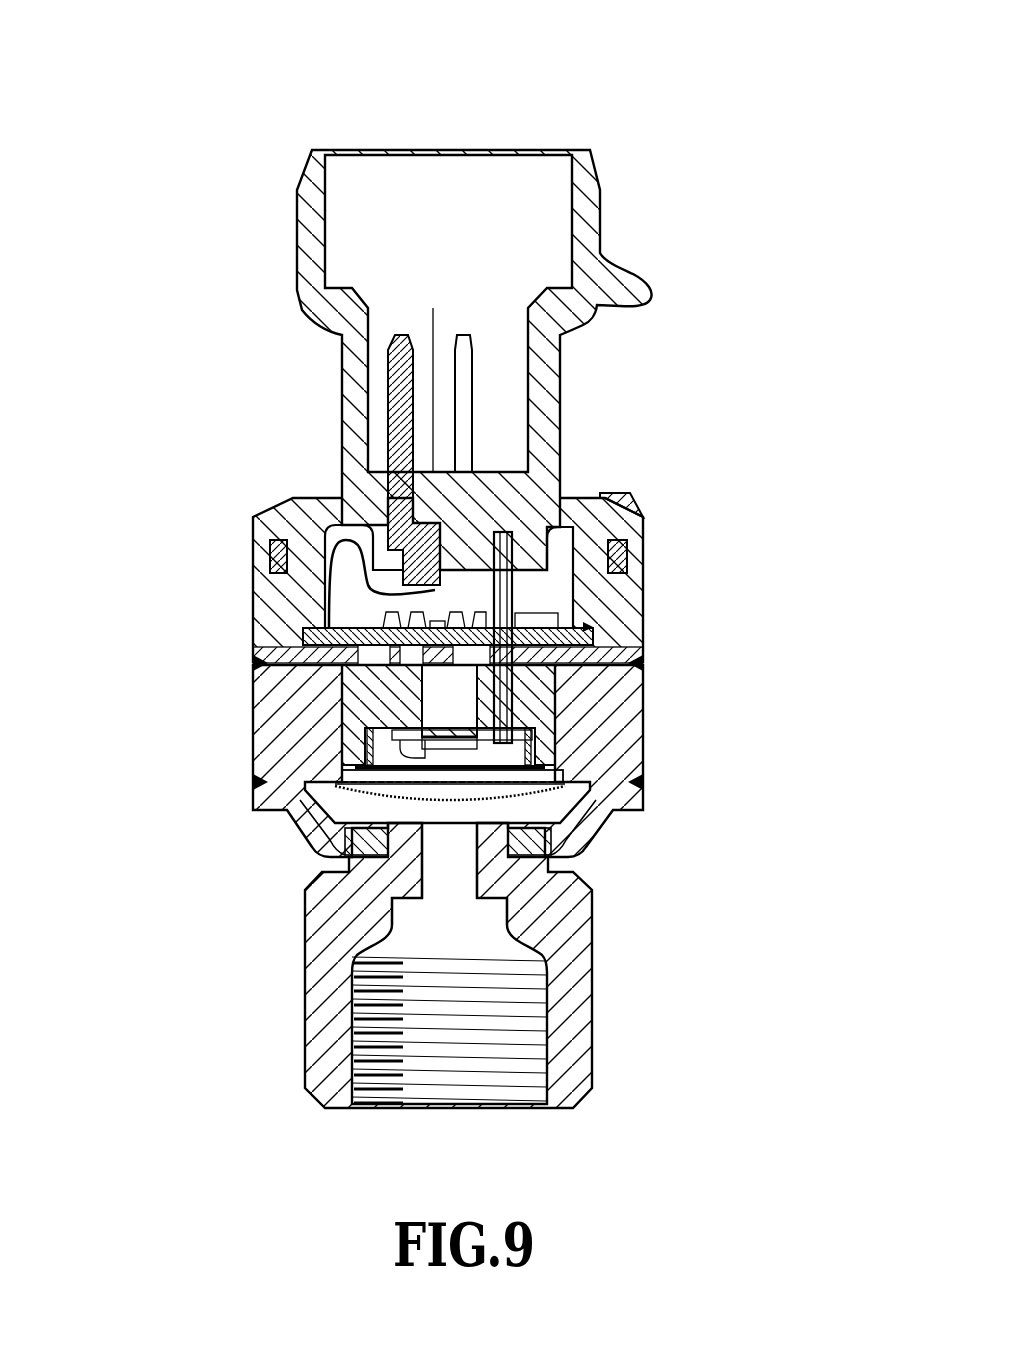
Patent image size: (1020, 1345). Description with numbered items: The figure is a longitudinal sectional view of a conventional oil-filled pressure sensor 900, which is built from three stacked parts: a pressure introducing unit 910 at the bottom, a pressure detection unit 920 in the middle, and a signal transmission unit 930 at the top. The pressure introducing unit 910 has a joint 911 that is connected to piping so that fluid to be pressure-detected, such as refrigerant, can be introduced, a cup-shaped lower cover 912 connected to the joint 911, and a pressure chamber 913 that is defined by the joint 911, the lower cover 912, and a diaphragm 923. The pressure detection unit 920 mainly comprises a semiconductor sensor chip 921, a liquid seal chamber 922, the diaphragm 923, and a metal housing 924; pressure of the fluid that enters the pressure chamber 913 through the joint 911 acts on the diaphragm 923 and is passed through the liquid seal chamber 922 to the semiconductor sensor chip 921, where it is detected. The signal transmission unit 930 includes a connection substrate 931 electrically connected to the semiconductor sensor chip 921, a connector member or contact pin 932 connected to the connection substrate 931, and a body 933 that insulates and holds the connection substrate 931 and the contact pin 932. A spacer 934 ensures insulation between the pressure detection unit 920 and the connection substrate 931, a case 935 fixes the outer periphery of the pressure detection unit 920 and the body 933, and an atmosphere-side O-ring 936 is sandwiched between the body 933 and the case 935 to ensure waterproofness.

The oil-filled pressure sensor 900 is at (690, 113).
The pressure introducing unit 910 is at (278, 980).
The joint 911 is at (578, 1018).
The lower cover 912 is at (587, 823).
The pressure chamber 913 is at (347, 820).
The pressure detection unit 920 is at (214, 724).
The semiconductor sensor chip 921 is at (470, 743).
The liquid seal chamber 922 is at (507, 758).
The diaphragm 923 is at (527, 778).
The metal housing 924 is at (613, 692).
The signal transmission unit 930 is at (214, 535).
The connection substrate 931 is at (573, 628).
The contact pin 932 is at (460, 387).
The body 933 is at (546, 427).
The spacer 934 is at (568, 647).
The case 935 is at (630, 508).
The atmosphere-side O-ring 936 is at (617, 560).